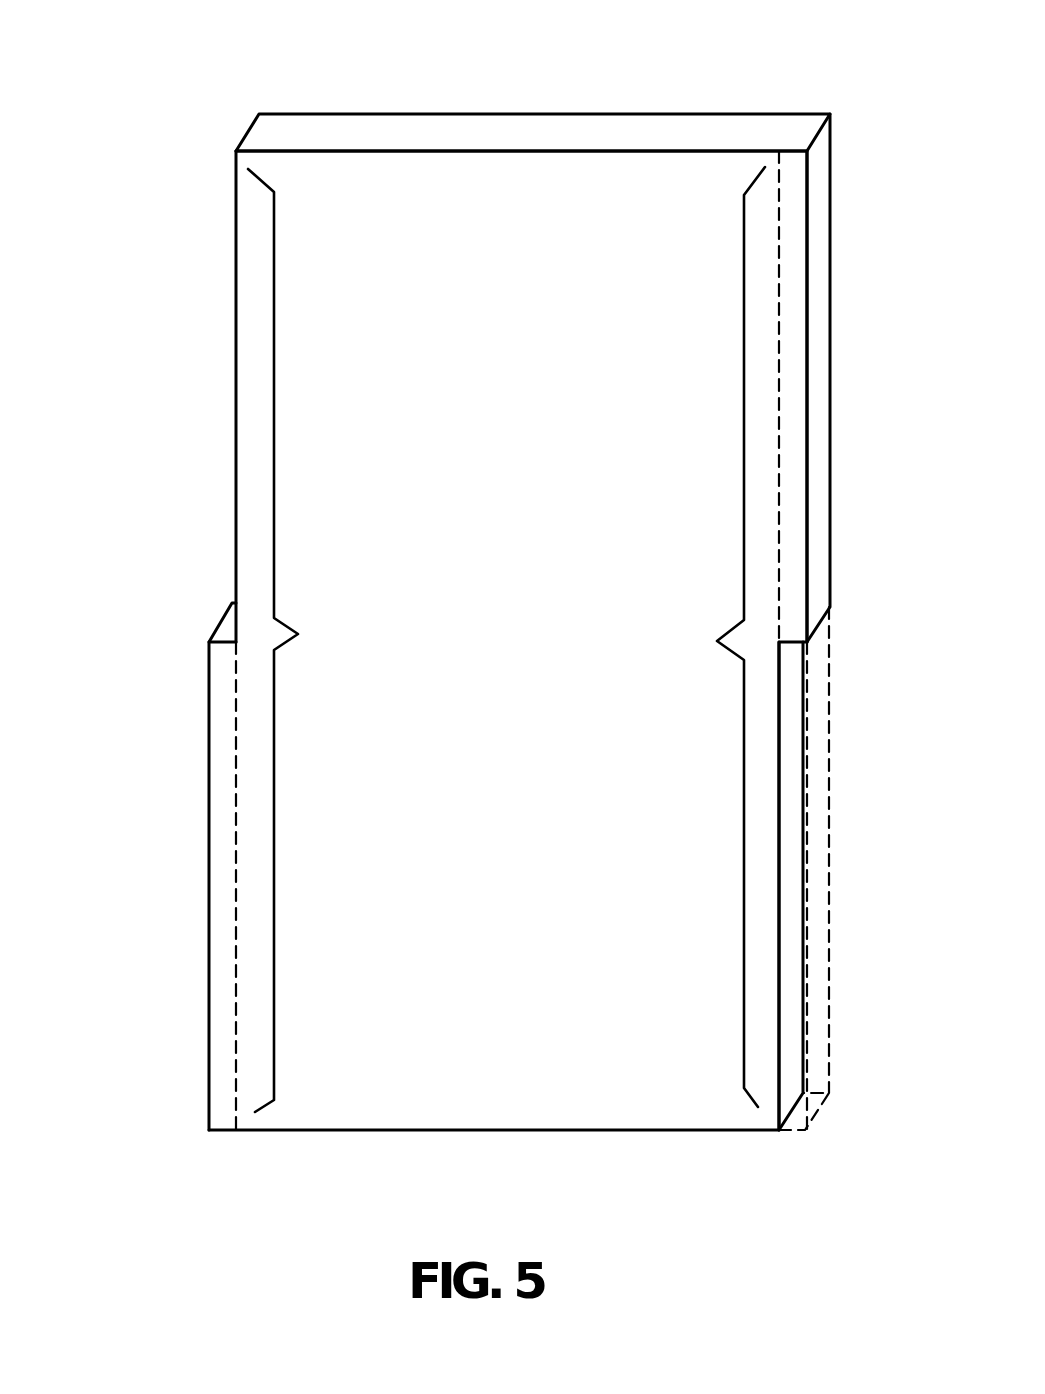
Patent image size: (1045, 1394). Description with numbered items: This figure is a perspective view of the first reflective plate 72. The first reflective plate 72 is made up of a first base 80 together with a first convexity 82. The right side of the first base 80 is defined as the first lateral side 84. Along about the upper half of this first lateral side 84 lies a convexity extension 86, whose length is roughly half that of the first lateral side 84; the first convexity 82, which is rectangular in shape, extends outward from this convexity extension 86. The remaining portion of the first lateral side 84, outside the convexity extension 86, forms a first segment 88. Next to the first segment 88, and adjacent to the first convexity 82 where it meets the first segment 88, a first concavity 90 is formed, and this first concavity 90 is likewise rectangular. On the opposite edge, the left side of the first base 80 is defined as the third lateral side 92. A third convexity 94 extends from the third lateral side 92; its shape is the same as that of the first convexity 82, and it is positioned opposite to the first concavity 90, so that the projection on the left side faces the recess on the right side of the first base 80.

The first reflective plate 72 is at (517, 75).
The first base 80 is at (632, 213).
The first convexity 82 is at (796, 294).
The first lateral side 84 is at (712, 637).
The convexity extension 86 is at (780, 217).
The first segment 88 is at (779, 998).
The first concavity 90 is at (817, 822).
The third lateral side 92 is at (300, 640).
The third convexity 94 is at (222, 842).